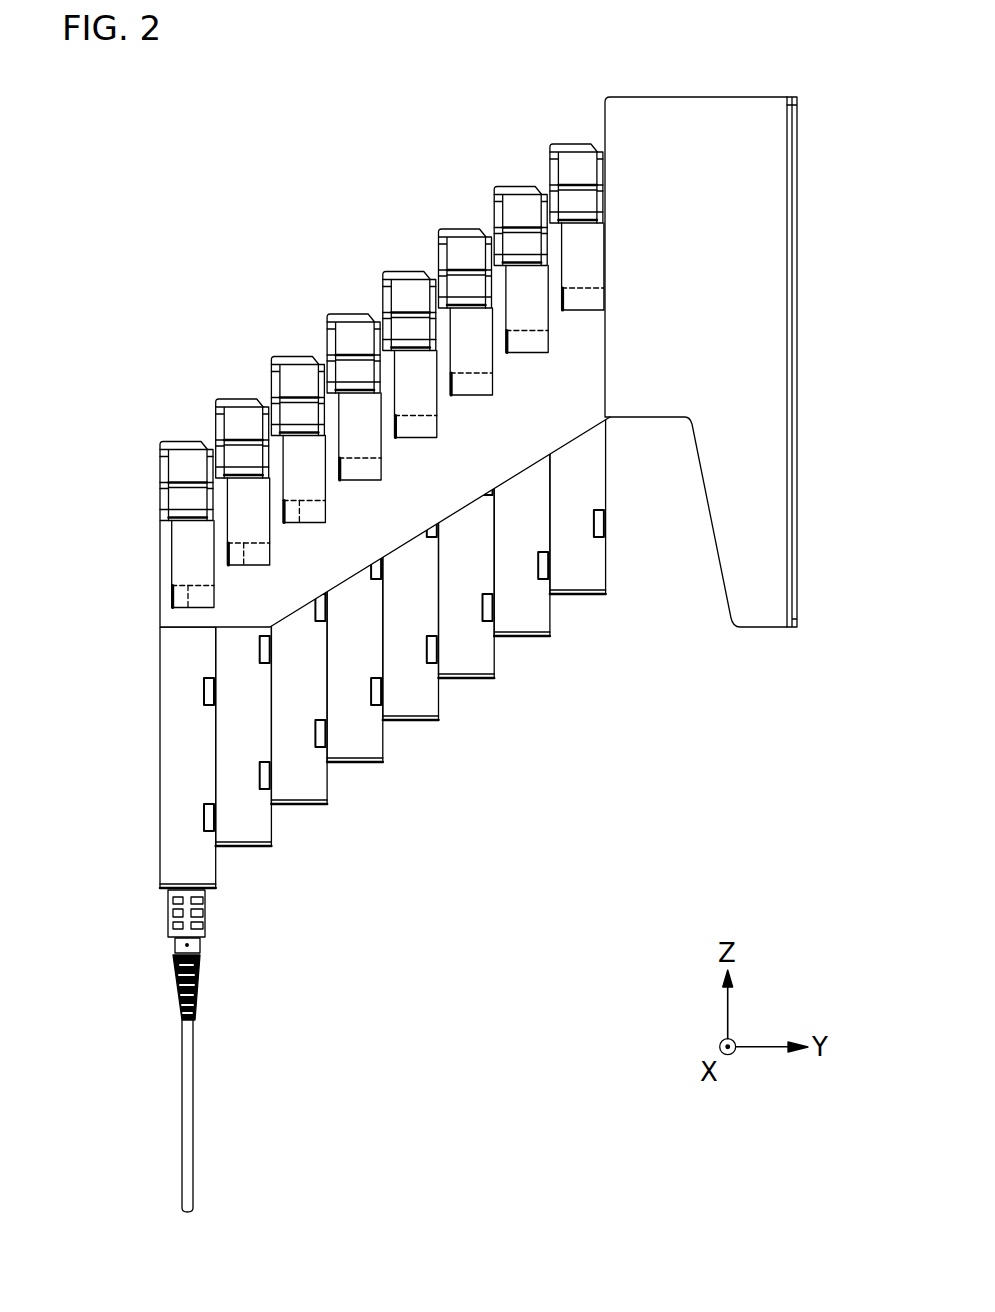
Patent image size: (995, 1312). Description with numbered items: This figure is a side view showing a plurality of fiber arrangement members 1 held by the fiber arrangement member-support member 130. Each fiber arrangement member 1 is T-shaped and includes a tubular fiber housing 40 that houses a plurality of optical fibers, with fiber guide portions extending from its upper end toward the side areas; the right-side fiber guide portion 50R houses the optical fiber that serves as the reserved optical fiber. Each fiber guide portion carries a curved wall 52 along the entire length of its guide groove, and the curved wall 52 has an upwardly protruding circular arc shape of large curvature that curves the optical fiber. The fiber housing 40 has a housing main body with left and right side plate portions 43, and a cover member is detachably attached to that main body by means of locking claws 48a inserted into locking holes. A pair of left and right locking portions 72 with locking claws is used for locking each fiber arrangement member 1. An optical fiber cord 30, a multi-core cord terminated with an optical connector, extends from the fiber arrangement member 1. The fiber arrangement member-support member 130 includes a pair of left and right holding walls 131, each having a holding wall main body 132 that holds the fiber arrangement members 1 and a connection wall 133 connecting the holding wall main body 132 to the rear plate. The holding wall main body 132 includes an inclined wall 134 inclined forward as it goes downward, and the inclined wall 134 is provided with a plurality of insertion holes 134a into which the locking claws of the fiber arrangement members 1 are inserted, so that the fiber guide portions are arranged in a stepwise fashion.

The fiber arrangement member 1 is at (333, 384).
The right-side fiber guide portion 50R is at (273, 420).
The curved wall 52 is at (298, 415).
The locking portion 72 is at (303, 460).
The fiber housing 40 is at (331, 626).
The side plate portion 43 is at (290, 632).
The locking claw 48a is at (320, 608).
The fiber arrangement member-support member 130 is at (469, 380).
The holding wall 131 is at (731, 429).
The holding wall main body 132 is at (722, 365).
The connection wall 133 is at (795, 320).
The inclined wall 134 is at (345, 496).
The insertion hole 134a is at (300, 522).
The optical fiber cord 30 is at (190, 1099).